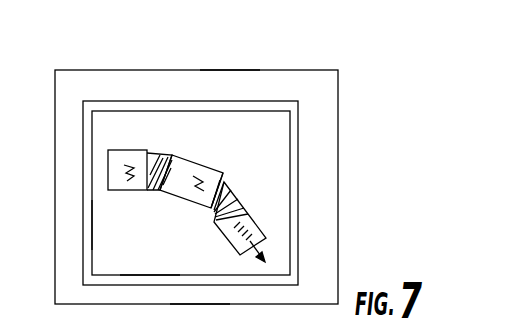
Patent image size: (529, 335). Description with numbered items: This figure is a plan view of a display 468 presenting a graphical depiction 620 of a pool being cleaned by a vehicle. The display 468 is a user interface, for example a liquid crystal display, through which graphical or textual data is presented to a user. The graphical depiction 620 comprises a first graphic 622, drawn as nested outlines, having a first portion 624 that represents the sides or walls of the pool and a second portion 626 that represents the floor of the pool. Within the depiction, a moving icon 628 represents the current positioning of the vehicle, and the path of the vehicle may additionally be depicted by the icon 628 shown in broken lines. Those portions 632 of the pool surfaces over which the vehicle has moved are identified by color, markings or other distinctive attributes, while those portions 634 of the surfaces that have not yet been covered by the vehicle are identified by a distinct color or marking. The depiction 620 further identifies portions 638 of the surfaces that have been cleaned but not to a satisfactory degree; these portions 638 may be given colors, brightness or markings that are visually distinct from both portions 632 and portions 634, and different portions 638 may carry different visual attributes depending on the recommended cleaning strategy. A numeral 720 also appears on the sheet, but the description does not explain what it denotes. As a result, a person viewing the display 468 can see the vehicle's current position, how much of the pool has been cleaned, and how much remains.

The display 468 is at (229, 58).
The graphical depiction 620 is at (143, 101).
The first graphic 622 is at (300, 236).
The first portion 624 is at (298, 193).
The second portion 626 is at (107, 226).
The moving icon 628 is at (291, 172).
The portions 632 is at (215, 222).
The portions 634 is at (147, 257).
The portions 638 is at (170, 155).
The base 720 is at (200, 319).